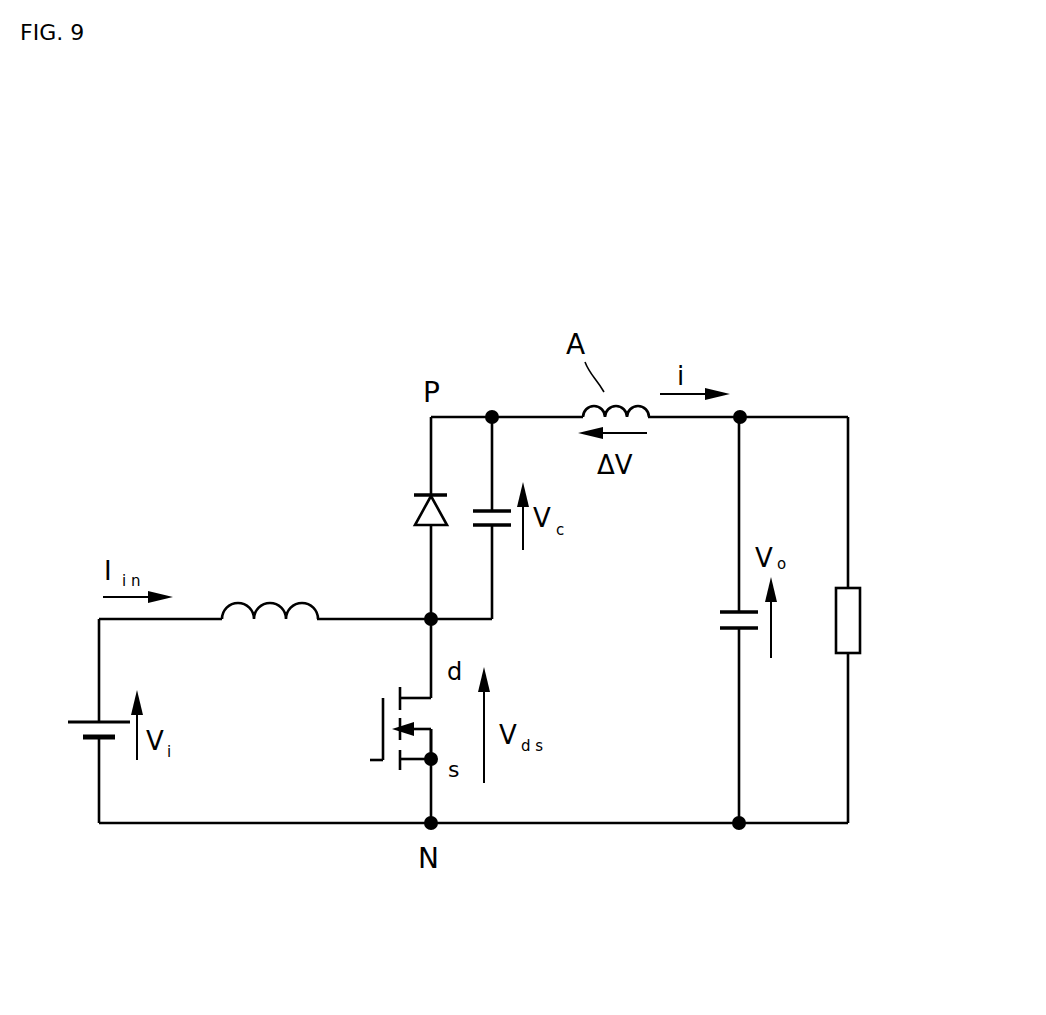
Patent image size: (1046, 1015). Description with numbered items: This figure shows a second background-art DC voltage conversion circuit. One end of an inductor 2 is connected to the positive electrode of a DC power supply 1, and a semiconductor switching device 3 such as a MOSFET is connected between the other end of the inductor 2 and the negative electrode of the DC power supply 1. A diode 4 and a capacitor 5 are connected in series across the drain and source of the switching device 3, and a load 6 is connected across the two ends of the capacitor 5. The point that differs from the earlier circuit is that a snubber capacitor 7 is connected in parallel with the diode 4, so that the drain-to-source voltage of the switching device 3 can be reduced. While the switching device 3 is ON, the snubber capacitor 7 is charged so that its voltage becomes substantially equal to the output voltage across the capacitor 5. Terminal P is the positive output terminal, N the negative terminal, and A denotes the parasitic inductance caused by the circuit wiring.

The DC power supply 1 is at (88, 708).
The inductor 2 is at (275, 597).
The semiconductor switching device 3 is at (410, 685).
The diode 4 is at (420, 487).
The capacitor 5 is at (724, 600).
The load 6 is at (855, 592).
The snubber capacitor 7 is at (502, 538).